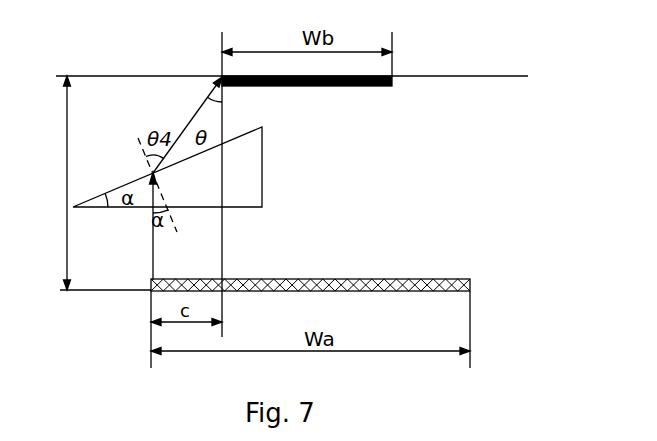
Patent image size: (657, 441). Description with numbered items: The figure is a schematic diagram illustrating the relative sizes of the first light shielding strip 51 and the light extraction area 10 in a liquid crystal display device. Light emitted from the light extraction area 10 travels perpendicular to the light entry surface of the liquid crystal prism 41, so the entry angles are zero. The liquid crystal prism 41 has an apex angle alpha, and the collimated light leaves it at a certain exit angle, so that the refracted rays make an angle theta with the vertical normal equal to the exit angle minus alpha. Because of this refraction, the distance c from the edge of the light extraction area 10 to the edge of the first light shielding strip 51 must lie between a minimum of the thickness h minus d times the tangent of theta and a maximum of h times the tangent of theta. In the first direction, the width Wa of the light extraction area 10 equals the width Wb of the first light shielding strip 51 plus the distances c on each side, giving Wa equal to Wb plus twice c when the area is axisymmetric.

The light extraction area 10 is at (403, 279).
The liquid crystal prism 41 is at (247, 172).
The first light shielding strip 51 is at (355, 87).